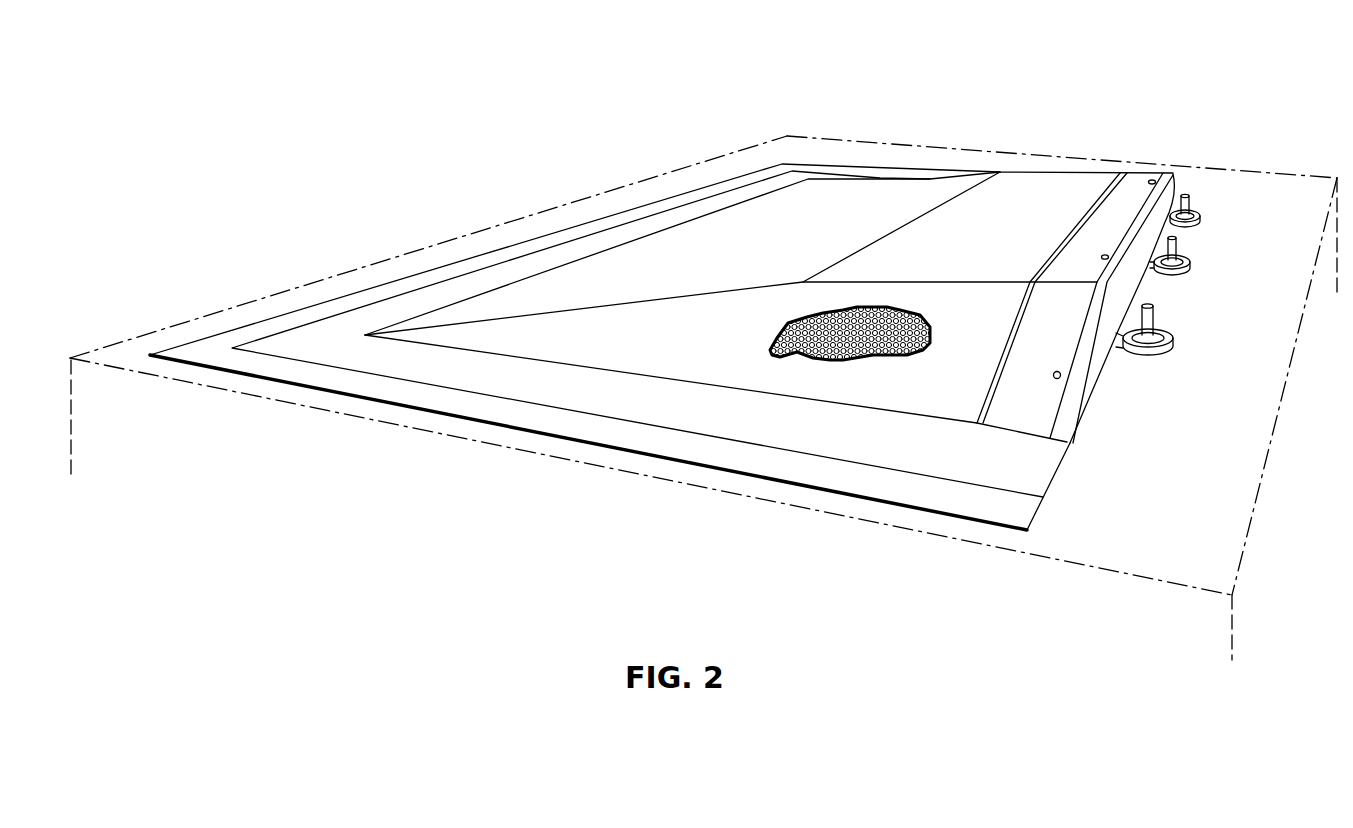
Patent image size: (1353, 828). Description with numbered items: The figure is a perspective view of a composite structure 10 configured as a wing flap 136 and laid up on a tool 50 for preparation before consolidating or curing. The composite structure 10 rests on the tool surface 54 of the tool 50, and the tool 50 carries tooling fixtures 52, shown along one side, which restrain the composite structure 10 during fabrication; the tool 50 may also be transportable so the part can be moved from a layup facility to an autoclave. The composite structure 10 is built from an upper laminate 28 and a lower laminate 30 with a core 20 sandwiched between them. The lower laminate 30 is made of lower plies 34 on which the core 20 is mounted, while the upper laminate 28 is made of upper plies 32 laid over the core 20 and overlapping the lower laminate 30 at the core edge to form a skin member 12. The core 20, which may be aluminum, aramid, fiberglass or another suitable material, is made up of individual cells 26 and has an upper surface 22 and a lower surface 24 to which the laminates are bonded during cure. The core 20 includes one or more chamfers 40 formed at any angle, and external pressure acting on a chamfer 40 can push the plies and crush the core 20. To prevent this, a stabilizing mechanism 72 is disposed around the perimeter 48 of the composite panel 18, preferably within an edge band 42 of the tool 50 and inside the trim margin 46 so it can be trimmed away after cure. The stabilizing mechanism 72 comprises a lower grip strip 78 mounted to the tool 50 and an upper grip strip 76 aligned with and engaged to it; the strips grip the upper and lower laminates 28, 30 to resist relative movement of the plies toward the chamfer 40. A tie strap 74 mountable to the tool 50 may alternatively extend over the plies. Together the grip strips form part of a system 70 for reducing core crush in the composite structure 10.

The composite structure 10 is at (703, 353).
The composite panel 18 is at (703, 353).
The system for reducing core crush 70 is at (703, 353).
The wing flap 136 is at (1123, 107).
The tool 50 is at (513, 218).
The tool surface 54 is at (615, 198).
The perimeter 48 is at (435, 266).
The edge band 42 is at (588, 442).
The trim margin 46 is at (357, 397).
The stabilizing mechanism 72 is at (637, 355).
The tie strap 74 is at (637, 355).
The upper grip strip 76 is at (637, 355).
The lower grip strip 78 is at (538, 420).
The chamfer 40 is at (739, 266).
The skin member 12 is at (716, 471).
The upper laminate 28 is at (716, 471).
The upper plies 32 is at (1000, 462).
The lower laminate 30 is at (1103, 405).
The lower plies 34 is at (1047, 493).
The lower surface 24 is at (1057, 480).
The core 20 is at (810, 435).
The upper surface 22 is at (810, 435).
The cells 26 is at (807, 362).
The tooling fixtures 52 is at (1190, 266).